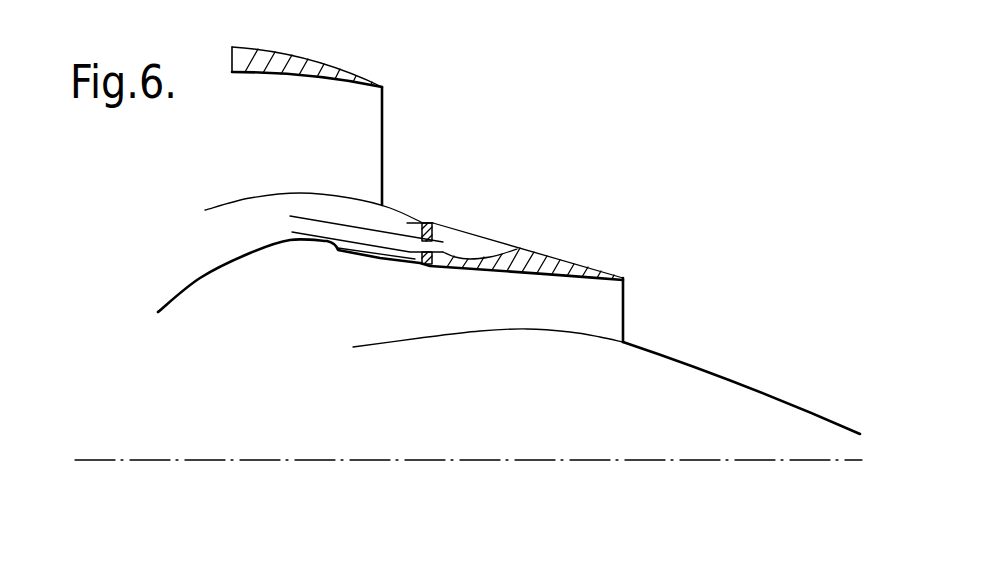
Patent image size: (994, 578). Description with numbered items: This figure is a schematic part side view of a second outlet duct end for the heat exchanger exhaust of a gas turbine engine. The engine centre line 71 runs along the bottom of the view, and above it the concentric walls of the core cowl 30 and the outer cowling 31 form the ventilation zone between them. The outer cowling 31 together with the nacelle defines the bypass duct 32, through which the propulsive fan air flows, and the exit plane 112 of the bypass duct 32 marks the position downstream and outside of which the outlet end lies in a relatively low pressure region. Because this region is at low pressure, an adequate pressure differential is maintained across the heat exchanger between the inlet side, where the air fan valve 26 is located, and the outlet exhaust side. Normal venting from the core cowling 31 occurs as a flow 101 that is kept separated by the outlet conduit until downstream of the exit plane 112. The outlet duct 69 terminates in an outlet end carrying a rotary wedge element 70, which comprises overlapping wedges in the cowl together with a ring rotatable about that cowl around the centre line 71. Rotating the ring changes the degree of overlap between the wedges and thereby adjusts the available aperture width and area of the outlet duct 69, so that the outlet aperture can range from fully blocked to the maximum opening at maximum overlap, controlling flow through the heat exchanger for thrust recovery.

The air fan valve 26 is at (412, 264).
The core cowl wall 30 is at (202, 278).
The outer cowling 31 is at (237, 202).
The bypass duct 32 is at (311, 163).
The outlet duct 69 is at (443, 243).
The rotary wedge element 70 is at (573, 264).
The centre line 71 is at (320, 458).
The flow 101 is at (435, 222).
The exit plane 112 is at (383, 119).